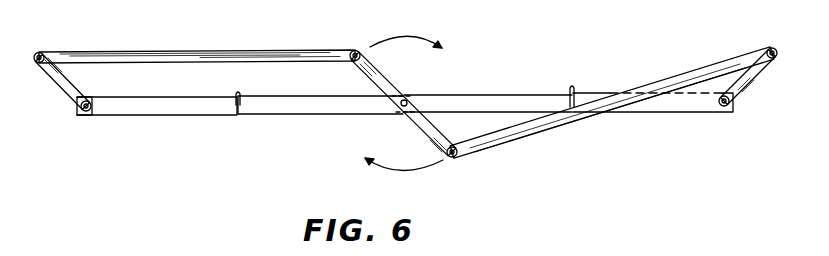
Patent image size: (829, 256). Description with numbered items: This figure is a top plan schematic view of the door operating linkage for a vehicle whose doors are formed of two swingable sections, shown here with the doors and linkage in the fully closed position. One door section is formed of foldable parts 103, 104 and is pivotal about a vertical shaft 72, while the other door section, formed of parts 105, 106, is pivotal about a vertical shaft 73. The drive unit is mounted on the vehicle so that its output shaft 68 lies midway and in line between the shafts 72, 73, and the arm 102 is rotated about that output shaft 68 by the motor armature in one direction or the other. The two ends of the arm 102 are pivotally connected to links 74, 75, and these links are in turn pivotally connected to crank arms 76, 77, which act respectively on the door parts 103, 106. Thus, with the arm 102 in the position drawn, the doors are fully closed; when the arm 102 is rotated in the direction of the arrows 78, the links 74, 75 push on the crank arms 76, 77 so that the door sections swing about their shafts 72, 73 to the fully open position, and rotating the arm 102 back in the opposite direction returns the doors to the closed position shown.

The output shaft 68 is at (408, 100).
The vertical shaft 72 is at (78, 113).
The vertical shaft 73 is at (733, 107).
The link 74 is at (181, 55).
The link 75 is at (515, 140).
The crank arm 76 is at (53, 79).
The crank arm 77 is at (757, 75).
The arrows 78 is at (385, 35).
The arm 102 is at (377, 77).
The foldable part 103 is at (173, 107).
The foldable part 104 is at (322, 105).
The part 105 is at (460, 100).
The part 106 is at (707, 106).